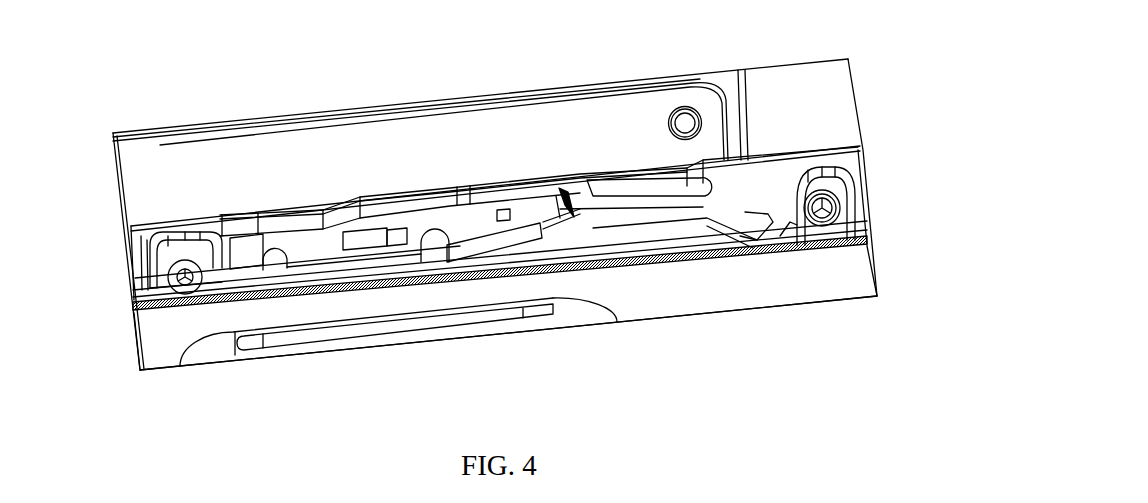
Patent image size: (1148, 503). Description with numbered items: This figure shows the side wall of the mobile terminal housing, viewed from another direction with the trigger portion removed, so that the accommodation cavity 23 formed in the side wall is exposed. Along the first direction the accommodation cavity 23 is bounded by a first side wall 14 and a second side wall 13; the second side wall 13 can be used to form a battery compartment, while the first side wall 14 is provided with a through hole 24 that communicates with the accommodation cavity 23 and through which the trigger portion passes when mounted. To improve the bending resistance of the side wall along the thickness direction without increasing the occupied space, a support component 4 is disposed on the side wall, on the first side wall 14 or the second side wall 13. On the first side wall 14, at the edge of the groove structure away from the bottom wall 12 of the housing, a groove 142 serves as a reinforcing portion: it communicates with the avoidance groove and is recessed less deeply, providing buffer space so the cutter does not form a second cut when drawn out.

The support component 4 is at (563, 195).
The bottom wall 12 is at (130, 292).
The second side wall 13 is at (415, 202).
The first side wall 14 is at (742, 285).
The groove 142 is at (752, 238).
The accommodation cavity 23 is at (712, 213).
The through hole 24 is at (487, 320).